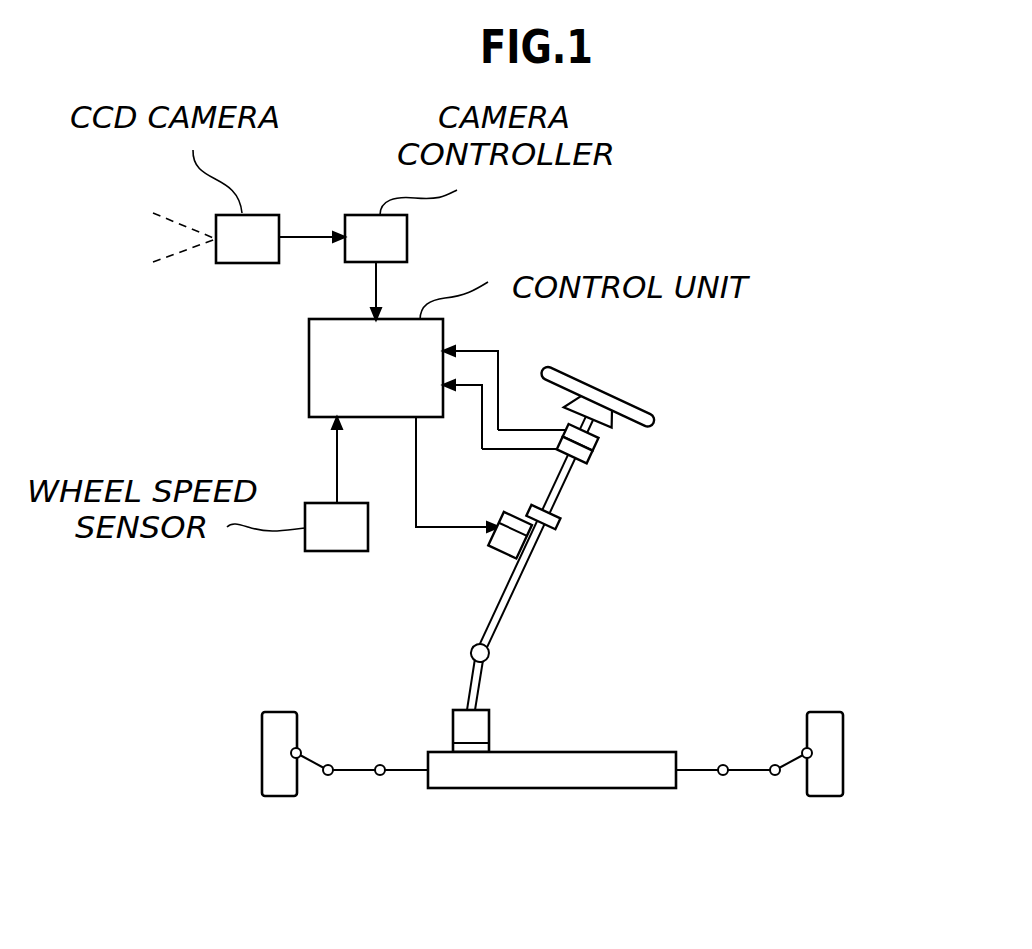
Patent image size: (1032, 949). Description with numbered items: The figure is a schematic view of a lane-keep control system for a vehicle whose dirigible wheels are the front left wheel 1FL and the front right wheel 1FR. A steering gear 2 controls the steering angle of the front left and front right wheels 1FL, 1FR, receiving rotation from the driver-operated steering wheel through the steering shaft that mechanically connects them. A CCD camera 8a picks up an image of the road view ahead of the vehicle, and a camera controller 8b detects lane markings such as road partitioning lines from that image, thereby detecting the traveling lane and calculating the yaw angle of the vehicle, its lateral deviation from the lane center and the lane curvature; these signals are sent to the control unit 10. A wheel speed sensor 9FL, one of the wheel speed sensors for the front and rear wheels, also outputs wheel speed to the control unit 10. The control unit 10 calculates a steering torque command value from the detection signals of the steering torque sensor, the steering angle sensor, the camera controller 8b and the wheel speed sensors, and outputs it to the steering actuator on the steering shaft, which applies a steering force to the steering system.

The front right wheel 1FR is at (262, 758).
The front left wheel 1FL is at (845, 750).
The steering gear 2 is at (613, 788).
The CCD camera 8a is at (245, 263).
The camera controller 8b is at (408, 235).
The wheel speed sensor 9FL is at (335, 553).
The control unit 10 is at (308, 392).